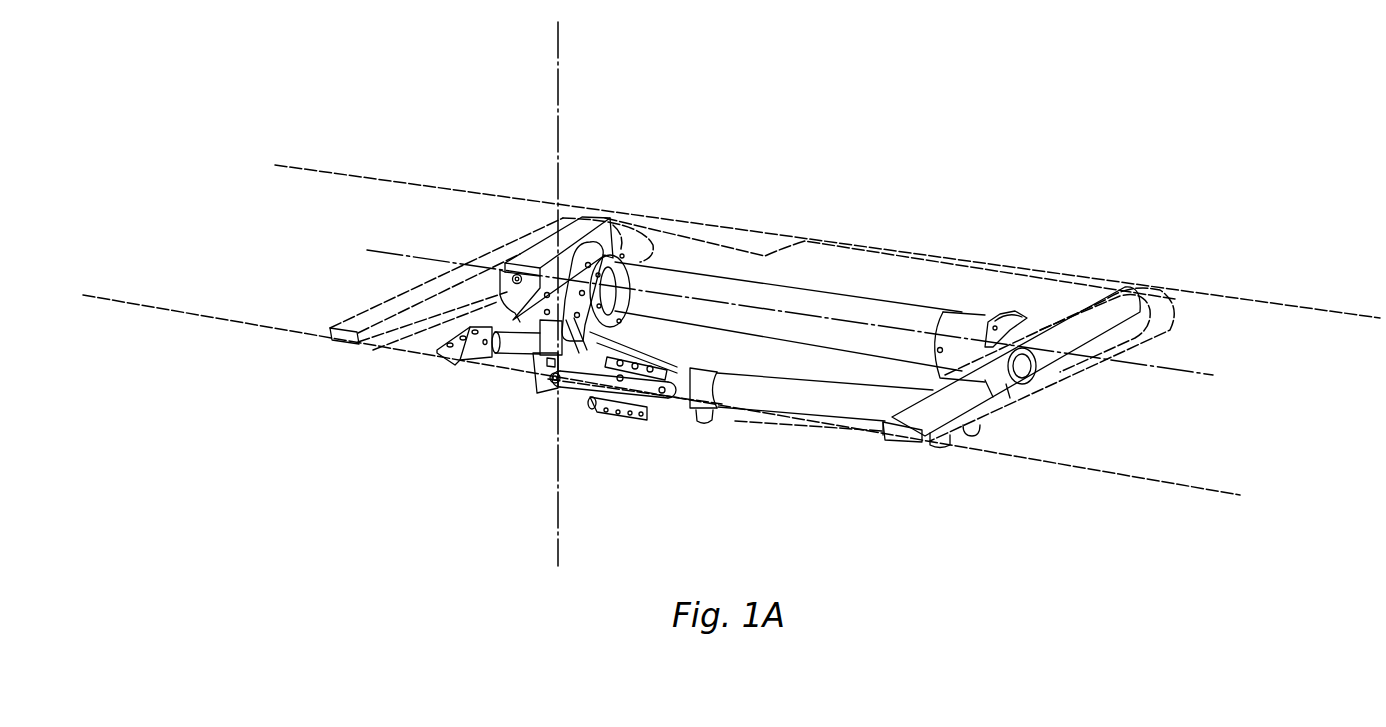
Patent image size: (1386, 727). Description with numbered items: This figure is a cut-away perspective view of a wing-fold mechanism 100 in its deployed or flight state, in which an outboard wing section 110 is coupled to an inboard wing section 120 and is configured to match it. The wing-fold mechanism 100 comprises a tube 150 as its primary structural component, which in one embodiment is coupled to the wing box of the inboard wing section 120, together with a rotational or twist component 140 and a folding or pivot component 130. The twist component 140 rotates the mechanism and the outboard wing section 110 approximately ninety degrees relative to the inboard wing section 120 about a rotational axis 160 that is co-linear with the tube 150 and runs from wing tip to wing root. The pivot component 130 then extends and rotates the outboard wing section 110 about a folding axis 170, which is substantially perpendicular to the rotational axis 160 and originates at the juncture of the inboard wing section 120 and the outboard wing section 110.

The wing-fold mechanism 100 is at (1058, 243).
The outboard wing section 110 is at (512, 238).
The inboard wing section 120 is at (1172, 318).
The folding or pivot component 130 is at (973, 438).
The rotational or twist component 140 is at (543, 377).
The tube 150 is at (876, 302).
The rotational axis 160 is at (1205, 377).
The folding or pivot axis 170 is at (560, 490).